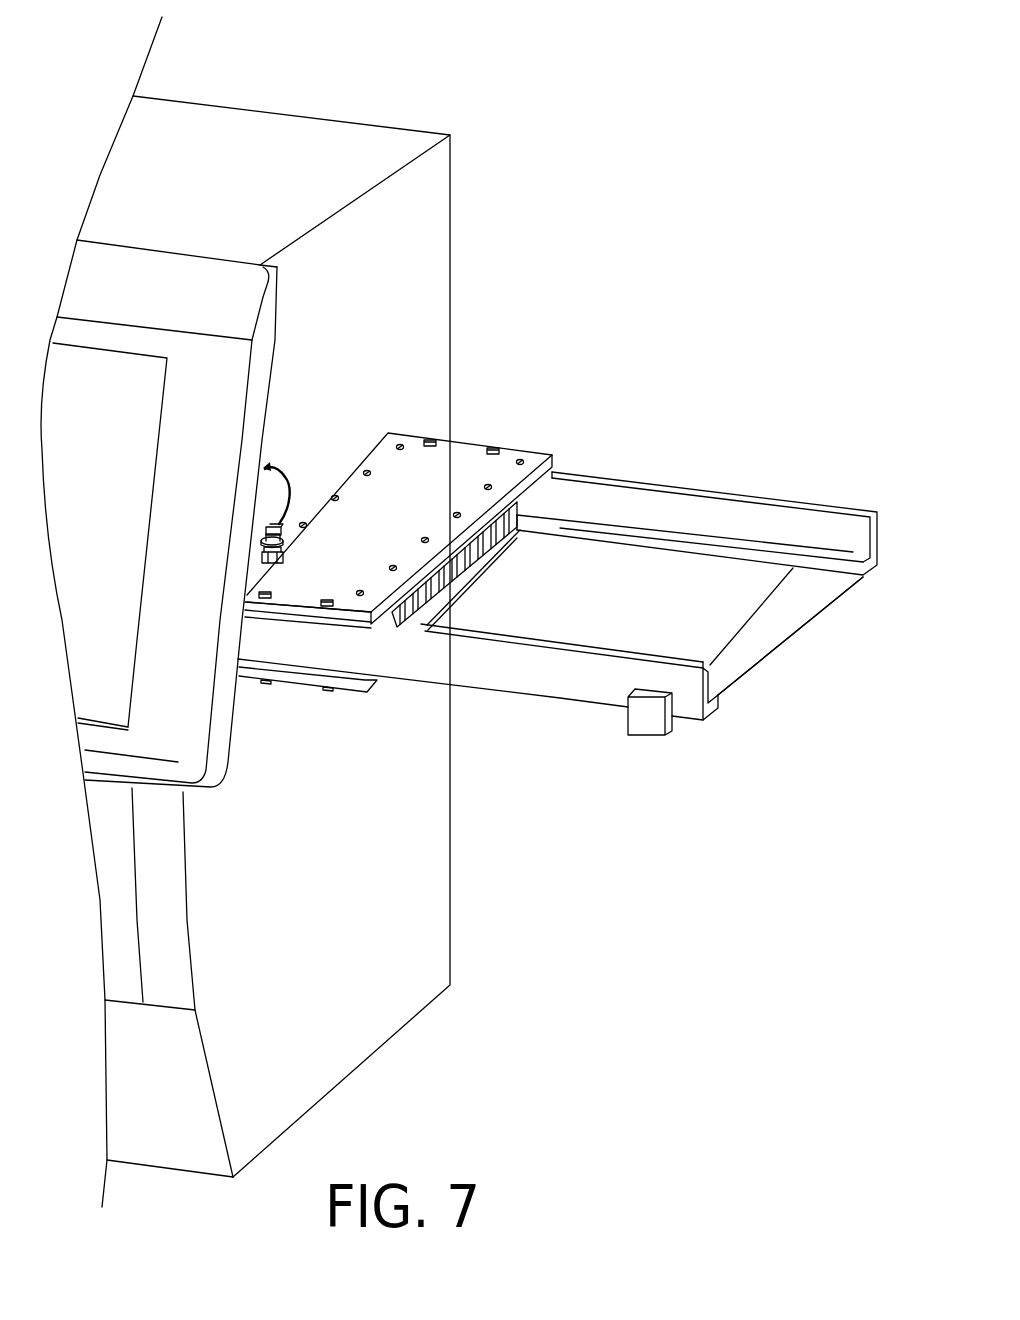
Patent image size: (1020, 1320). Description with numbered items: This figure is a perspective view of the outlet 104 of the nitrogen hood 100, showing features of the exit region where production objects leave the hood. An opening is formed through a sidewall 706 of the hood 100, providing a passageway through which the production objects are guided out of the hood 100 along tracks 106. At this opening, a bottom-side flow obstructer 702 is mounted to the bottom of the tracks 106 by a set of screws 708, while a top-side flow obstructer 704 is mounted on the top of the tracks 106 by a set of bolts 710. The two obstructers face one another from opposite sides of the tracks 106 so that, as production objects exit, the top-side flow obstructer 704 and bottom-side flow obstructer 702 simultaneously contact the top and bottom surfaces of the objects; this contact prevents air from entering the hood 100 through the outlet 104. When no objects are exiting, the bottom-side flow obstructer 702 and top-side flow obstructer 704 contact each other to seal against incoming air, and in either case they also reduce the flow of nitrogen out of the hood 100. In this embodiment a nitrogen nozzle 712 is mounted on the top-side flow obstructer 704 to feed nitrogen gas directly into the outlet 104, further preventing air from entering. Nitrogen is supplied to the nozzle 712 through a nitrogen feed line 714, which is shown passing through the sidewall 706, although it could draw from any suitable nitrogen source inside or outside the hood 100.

The nitrogen hood 100 is at (493, 118).
The outlet 104 is at (659, 381).
The tracks 106 is at (855, 538).
The bottom-side flow obstructer 702 is at (504, 605).
The top-side flow obstructer 704 is at (561, 508).
The sidewall 706 is at (413, 322).
The screws 708 is at (335, 688).
The bolts 710 is at (505, 444).
The nitrogen nozzle 712 is at (299, 547).
The nitrogen feed line 714 is at (290, 477).